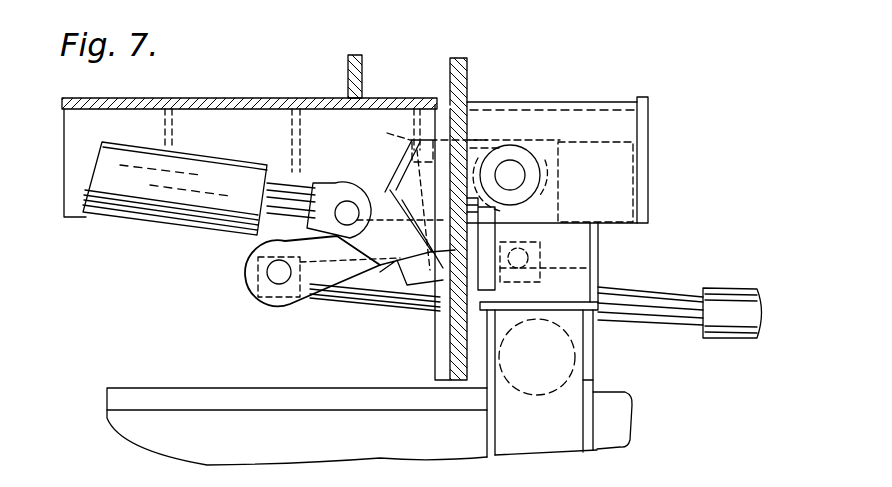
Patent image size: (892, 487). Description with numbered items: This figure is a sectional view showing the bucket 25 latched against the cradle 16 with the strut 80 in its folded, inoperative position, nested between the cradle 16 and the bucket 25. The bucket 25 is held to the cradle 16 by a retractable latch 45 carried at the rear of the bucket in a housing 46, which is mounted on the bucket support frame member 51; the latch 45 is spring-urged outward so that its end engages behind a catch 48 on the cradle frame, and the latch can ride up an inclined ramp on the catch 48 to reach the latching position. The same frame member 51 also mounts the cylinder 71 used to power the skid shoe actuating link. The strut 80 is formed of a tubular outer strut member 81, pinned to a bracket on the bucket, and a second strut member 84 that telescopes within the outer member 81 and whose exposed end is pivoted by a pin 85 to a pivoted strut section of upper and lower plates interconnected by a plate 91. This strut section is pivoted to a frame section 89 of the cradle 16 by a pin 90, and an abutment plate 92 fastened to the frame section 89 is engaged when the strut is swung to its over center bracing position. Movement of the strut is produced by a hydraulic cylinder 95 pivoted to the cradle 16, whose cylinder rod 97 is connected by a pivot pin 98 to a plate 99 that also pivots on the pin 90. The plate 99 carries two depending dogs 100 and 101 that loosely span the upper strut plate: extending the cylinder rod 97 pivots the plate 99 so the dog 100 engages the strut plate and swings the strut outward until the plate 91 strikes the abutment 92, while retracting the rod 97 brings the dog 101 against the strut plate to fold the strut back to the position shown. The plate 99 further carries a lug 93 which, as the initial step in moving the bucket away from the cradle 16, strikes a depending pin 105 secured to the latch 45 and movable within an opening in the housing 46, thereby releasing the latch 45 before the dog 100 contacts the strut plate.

The cradle 16 is at (494, 93).
The frame section 89 is at (620, 103).
The pin 90 is at (508, 167).
The lug 93 is at (523, 213).
The housing 46 is at (578, 222).
The dog 100 is at (418, 142).
The plate 99 is at (403, 173).
The plate 91 is at (401, 210).
The cylinder rod 97 is at (277, 183).
The hydraulic cylinder 95 is at (108, 200).
The pivot pin 98 is at (347, 210).
The pin 85 is at (270, 280).
The dog 101 is at (370, 292).
The second strut member 84 is at (388, 293).
The abutment plate 92 is at (616, 240).
The depending pin 105 is at (534, 271).
The retractable latch 45 is at (598, 268).
The strut 80 is at (698, 279).
The tubular outer strut member 81 is at (740, 333).
The bucket 25 is at (96, 430).
The catch 48 is at (495, 326).
The support frame member 51 is at (593, 352).
The cylinder 71 is at (592, 378).